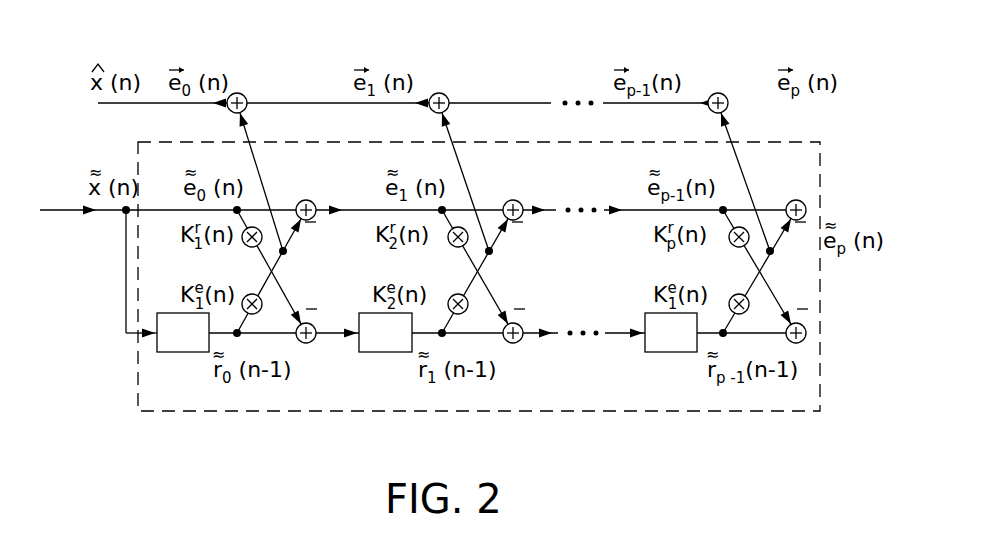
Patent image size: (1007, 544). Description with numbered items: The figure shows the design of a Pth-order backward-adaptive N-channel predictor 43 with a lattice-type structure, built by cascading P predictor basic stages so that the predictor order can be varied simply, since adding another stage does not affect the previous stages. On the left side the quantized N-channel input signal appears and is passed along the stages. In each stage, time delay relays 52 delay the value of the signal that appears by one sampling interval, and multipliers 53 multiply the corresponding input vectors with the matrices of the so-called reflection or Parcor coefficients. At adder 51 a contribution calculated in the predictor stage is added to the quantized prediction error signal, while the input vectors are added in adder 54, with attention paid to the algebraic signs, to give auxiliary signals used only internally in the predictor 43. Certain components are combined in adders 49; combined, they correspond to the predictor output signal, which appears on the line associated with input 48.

The N-channel predictor 43 is at (810, 272).
The input 48 is at (108, 104).
The adders 49 is at (241, 93).
The adder 51 is at (309, 200).
The time delay relays 52 is at (156, 347).
The multipliers 53 is at (247, 295).
The adder 54 is at (308, 343).